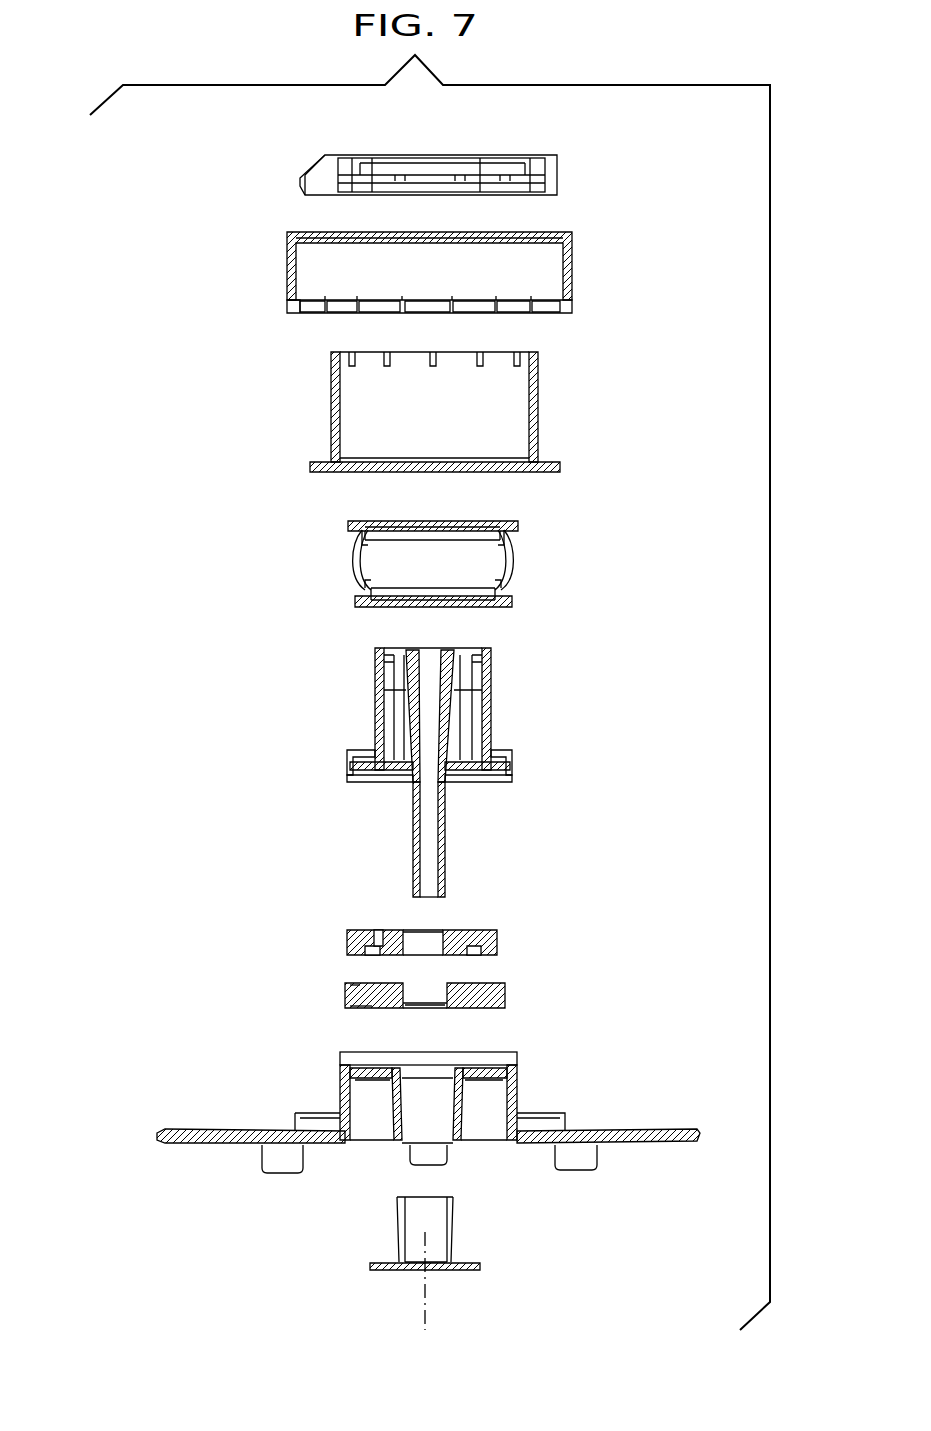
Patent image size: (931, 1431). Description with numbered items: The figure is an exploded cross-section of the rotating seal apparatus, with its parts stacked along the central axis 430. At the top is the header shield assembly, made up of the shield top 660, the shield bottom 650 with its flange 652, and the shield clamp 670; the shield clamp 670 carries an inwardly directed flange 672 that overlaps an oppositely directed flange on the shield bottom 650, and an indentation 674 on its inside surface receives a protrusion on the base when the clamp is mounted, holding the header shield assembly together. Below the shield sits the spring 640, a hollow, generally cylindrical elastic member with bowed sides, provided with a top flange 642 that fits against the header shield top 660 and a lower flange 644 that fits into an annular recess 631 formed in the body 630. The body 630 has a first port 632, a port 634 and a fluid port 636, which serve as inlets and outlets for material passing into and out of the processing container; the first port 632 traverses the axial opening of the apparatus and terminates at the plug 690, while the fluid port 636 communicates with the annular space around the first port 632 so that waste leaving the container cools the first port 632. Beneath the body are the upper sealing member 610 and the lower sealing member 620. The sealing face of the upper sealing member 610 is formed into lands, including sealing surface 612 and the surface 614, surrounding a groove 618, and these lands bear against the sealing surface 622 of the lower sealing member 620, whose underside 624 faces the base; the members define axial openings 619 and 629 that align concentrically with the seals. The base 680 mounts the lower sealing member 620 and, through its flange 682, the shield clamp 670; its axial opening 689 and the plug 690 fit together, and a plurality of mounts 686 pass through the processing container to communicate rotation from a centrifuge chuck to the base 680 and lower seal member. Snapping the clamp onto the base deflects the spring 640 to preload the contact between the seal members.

The shield top 660 is at (560, 174).
The shield clamp 670 is at (574, 270).
The inwardly directed flange 672 is at (560, 226).
The indentation 674 is at (287, 304).
The shield bottom 650 is at (560, 389).
The housing flange 652 is at (545, 463).
The spring 640 is at (545, 561).
The top flange 642 is at (545, 522).
The lower flange 644 is at (535, 600).
The body 630 is at (440, 770).
The annular recess 631 is at (492, 752).
The first port 632 is at (432, 645).
The port 634 is at (385, 667).
The fluid port 636 is at (470, 668).
The upper sealing member 610 is at (460, 939).
The sealing surface 612 is at (362, 955).
The valve seat flange 614 is at (490, 930).
The groove 618 is at (470, 955).
The axial opening 619 is at (430, 932).
The lower sealing member 620 is at (449, 1006).
The sealing surface 622 is at (360, 983).
The lower seat bottom 624 is at (372, 1010).
The axial opening 629 is at (428, 1005).
The base 680 is at (428, 1129).
The flange 682 is at (520, 1112).
The mounts 686 is at (296, 1160).
The axial opening 689 is at (443, 1125).
The plug 690 is at (466, 1226).
The central axis 430 is at (425, 1292).